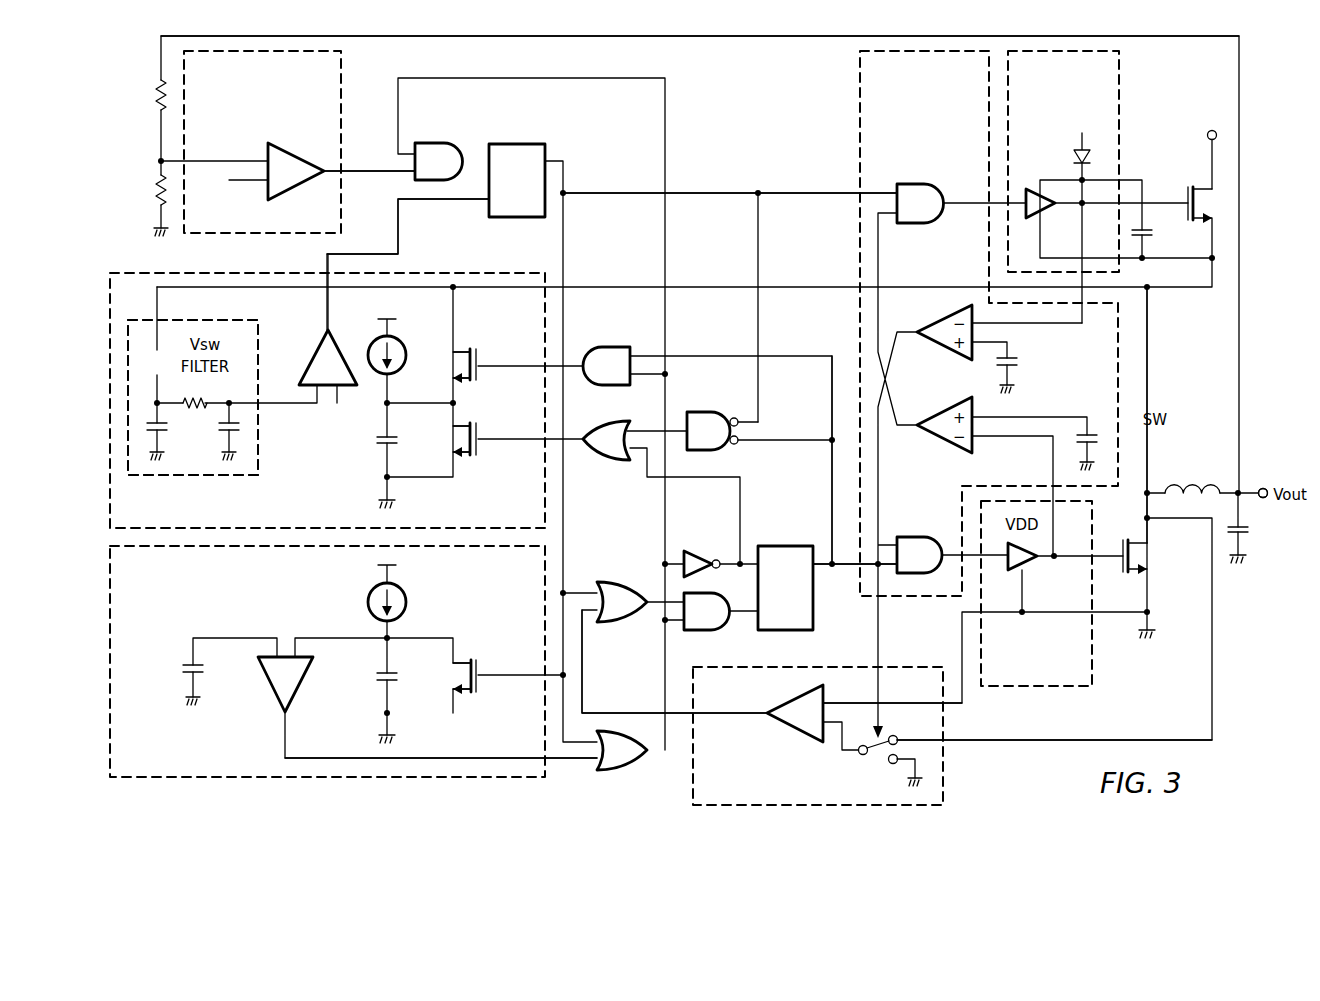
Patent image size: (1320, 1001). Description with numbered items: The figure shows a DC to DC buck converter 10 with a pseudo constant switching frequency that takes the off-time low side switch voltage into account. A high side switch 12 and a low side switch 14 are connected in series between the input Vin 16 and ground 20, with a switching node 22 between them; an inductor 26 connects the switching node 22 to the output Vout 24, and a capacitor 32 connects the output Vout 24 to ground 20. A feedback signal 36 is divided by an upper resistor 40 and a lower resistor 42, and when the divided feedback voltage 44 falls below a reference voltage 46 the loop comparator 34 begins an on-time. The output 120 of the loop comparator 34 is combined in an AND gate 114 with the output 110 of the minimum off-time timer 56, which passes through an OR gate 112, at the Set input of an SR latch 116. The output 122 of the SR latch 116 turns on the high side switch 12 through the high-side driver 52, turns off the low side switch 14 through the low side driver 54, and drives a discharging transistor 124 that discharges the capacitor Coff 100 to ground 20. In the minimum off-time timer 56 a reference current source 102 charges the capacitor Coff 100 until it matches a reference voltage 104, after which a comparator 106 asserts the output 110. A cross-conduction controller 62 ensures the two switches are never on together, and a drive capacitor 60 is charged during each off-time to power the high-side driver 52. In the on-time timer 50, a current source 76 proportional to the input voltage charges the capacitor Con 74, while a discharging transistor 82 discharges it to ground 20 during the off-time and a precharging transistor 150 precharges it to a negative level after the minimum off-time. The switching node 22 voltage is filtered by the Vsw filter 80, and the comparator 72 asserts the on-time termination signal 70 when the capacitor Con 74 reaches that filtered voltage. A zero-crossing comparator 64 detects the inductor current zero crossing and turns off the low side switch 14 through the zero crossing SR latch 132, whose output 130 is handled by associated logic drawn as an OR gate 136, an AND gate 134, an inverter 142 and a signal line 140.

The DC to DC buck converter 10 is at (1253, 712).
The high side switch 12 is at (1181, 191).
The low side switch 14 is at (1116, 541).
The input Vin 16 is at (1207, 133).
The ground 20 is at (1253, 562).
The switching node 22 is at (1150, 490).
The output Vout 24 is at (1260, 488).
The inductor 26 is at (1190, 484).
The capacitor 32 is at (1253, 532).
The loop comparator 34 is at (343, 73).
The feedback signal 36 is at (712, 37).
The upper resistor 40 is at (157, 95).
The lower resistor 42 is at (157, 193).
The divided feedback voltage 44 is at (254, 158).
The reference voltage 46 is at (254, 186).
The on-time timer 50 is at (148, 273).
The high-side driver 52 is at (1120, 92).
The low side driver 54 is at (1094, 662).
The minimum off-time timer 56 is at (186, 750).
The drive capacitor 60 is at (1153, 233).
The cross-conduction controller 62 is at (860, 91).
The zero-crossing comparator 64 is at (945, 769).
The on-time termination signal 70 is at (459, 201).
The comparator 72 is at (319, 355).
The capacitor Con 74 is at (377, 439).
The current source 76 is at (401, 345).
The Vsw filter 80 is at (260, 425).
The discharging transistor 82 is at (477, 452).
The capacitor Coff 100 is at (376, 675).
The reference current source 102 is at (408, 600).
The reference voltage 104 is at (180, 669).
The comparator 106 is at (272, 685).
The output of the minimum off-time timer 110 is at (568, 762).
The OR gate 112 is at (640, 764).
The AND gate 114 is at (433, 142).
The SR latch 116 is at (516, 219).
The output of the loop comparator 120 is at (377, 170).
The output of the SR latch 122 is at (736, 192).
The discharging transistor 124 is at (480, 686).
The zero-crossing latch output 130 is at (852, 569).
The zero crossing SR latch 132 is at (816, 622).
The AND gate 134 is at (712, 638).
The OR gate 136 is at (619, 584).
The zero-crossing signal line 140 is at (612, 712).
The inverter 142 is at (710, 549).
The precharging transistor 150 is at (480, 376).